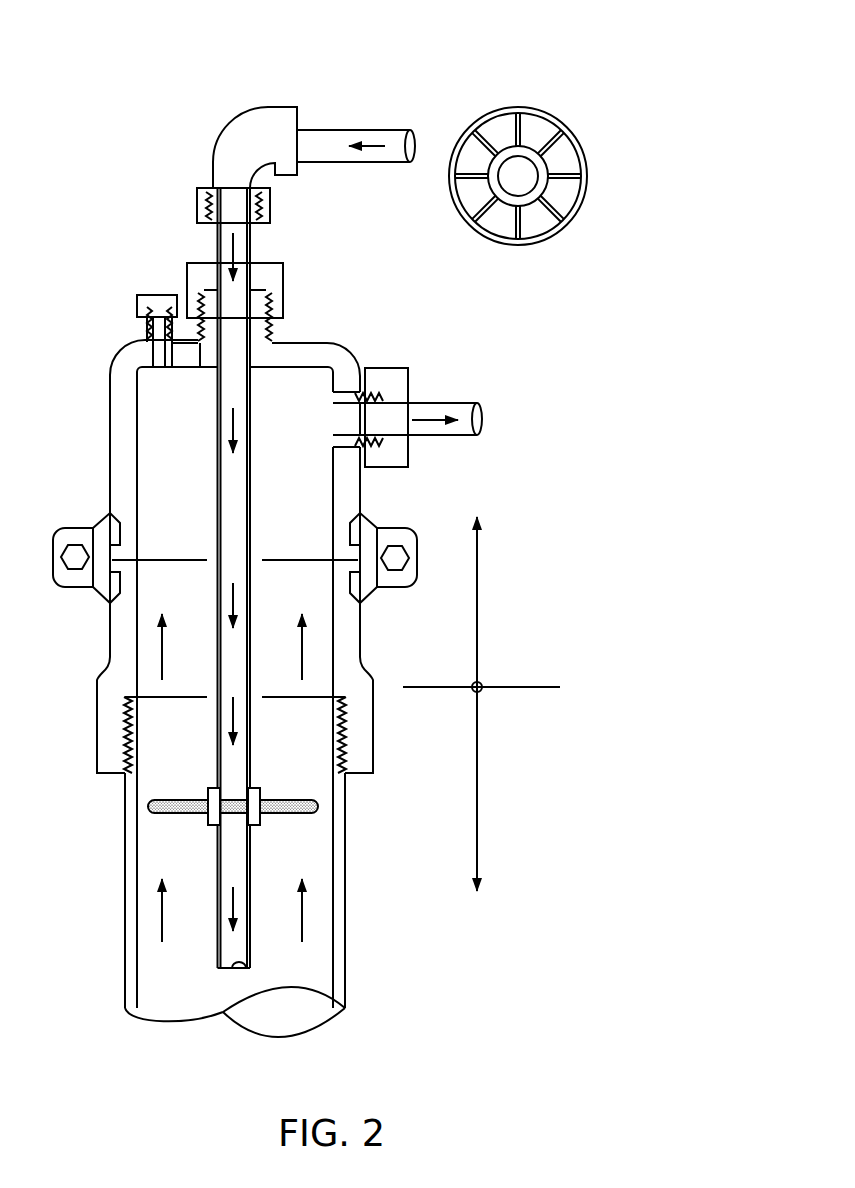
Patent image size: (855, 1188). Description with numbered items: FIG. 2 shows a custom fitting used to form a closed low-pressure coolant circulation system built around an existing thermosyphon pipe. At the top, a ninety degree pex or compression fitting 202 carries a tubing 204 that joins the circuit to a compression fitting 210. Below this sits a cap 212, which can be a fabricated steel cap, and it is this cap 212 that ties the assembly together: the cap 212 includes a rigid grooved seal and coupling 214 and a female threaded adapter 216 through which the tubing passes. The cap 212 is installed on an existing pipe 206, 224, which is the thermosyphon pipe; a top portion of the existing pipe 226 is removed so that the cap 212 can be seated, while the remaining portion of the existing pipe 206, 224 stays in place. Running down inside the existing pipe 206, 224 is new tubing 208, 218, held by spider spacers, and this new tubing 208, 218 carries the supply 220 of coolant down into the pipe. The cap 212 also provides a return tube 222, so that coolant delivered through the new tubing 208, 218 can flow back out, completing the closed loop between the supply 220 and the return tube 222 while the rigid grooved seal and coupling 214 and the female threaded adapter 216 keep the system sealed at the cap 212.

The 90 degree pex or compression fitting 202 is at (226, 119).
The tubing 204 is at (350, 117).
The existing pipe 206 is at (518, 158).
The new tubing 208 is at (536, 210).
The compression fitting 210 is at (294, 268).
The cap 212 is at (340, 341).
The rigid grooved seal and coupling 214 is at (85, 520).
The female threaded adapter 216 is at (93, 669).
The new tubing 218 is at (213, 941).
The supply 220 is at (232, 775).
The return tube 222 is at (353, 420).
The existing pipe 224 is at (478, 807).
The top portion of the existing pipe 226 is at (478, 607).